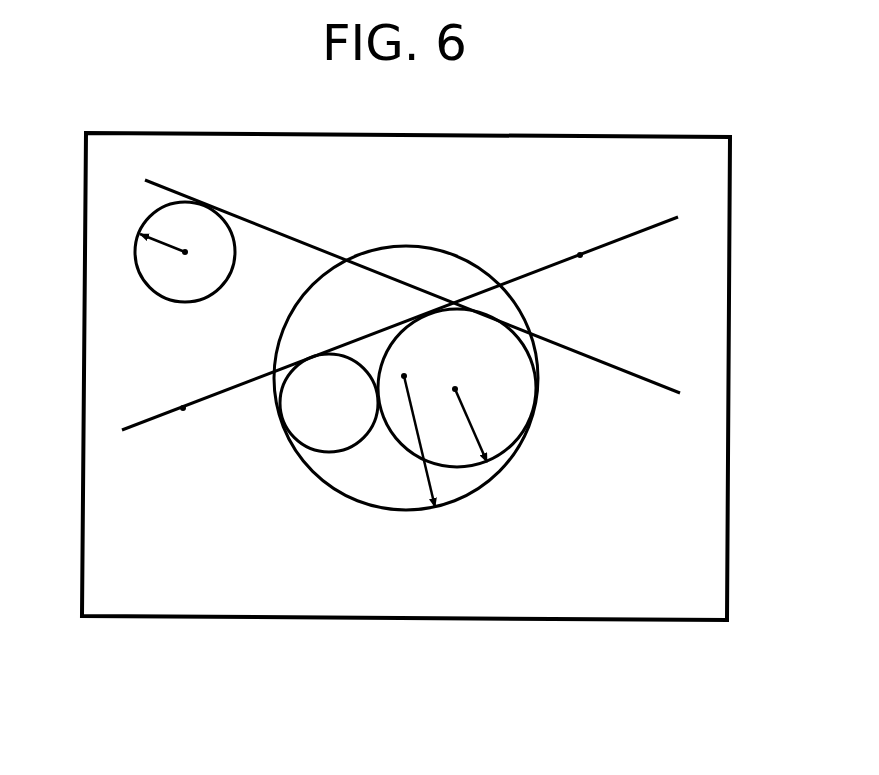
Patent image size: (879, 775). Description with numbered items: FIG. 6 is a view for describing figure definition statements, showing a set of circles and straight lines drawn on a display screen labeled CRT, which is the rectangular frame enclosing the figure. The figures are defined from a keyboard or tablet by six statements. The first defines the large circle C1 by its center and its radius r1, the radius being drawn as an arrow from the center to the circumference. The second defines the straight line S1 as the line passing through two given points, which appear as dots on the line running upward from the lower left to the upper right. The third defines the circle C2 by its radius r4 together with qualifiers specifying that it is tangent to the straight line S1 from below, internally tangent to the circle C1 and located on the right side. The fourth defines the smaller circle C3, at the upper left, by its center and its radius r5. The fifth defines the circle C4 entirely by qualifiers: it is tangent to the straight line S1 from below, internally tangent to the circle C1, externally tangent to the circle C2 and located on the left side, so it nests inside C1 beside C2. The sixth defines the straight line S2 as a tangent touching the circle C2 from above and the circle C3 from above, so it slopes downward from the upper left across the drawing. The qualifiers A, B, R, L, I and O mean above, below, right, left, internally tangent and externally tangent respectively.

The CRT display screen CRT is at (727, 557).
The straight line S1 is at (658, 222).
The straight line (tangent) S2 is at (657, 380).
The circle C1 is at (400, 512).
The circle C2 is at (463, 473).
The circle C3 is at (135, 257).
The circle C4 is at (325, 453).
The radius r1 is at (423, 441).
The radius r4 is at (475, 425).
The radius r5 is at (162, 236).